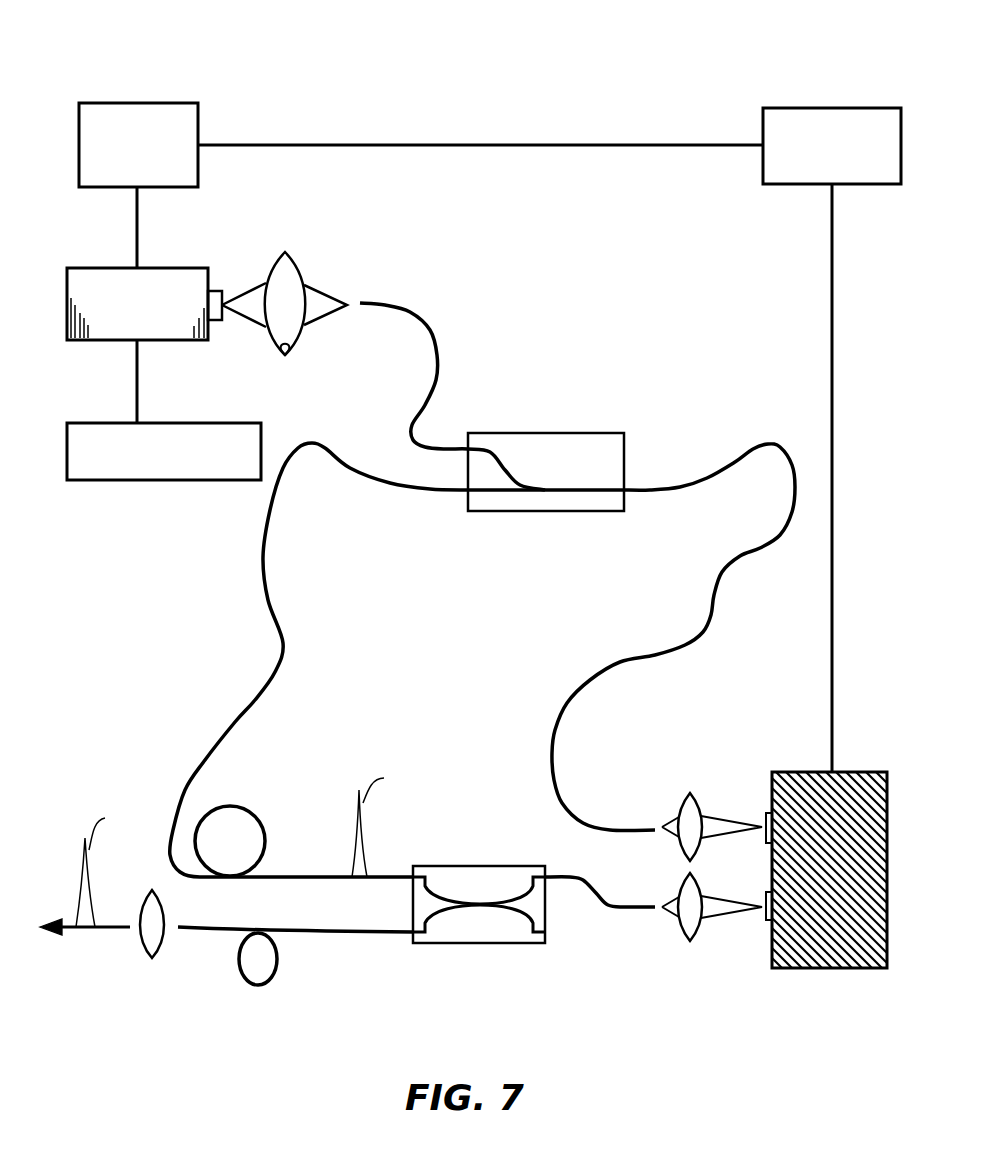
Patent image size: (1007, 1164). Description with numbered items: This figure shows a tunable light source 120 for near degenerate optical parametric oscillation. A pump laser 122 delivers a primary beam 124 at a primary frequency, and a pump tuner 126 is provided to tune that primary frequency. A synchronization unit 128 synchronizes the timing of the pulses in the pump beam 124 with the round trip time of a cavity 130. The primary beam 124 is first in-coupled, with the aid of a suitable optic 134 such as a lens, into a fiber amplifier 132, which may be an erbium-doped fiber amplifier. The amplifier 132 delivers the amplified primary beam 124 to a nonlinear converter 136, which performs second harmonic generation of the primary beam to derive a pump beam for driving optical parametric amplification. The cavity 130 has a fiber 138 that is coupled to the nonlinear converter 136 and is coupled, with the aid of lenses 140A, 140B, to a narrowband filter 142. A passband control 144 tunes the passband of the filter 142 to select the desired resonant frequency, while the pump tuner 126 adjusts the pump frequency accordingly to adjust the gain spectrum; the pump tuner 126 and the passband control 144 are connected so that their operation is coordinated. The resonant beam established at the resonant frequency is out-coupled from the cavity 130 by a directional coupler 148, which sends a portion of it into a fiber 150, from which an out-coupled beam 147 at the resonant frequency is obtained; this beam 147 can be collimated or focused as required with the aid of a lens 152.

The tunable light source 120 is at (708, 60).
The pump laser 122 is at (195, 268).
The primary beam 124 is at (308, 282).
The pump tuner 126 is at (120, 103).
The synchronization unit 128 is at (185, 423).
The cavity 130 is at (196, 648).
The fiber amplifier 132 is at (425, 312).
The optic 134 is at (288, 347).
The nonlinear converter 136 is at (556, 433).
The fiber 138 is at (285, 675).
The lens 140A is at (672, 808).
The lens 140B is at (695, 930).
The narrowband filter 142 is at (783, 772).
The passband control 144 is at (790, 186).
The out-coupled beam 147 is at (124, 930).
The directional coupler 148 is at (480, 866).
The fiber 150 is at (328, 932).
The lens 152 is at (165, 948).